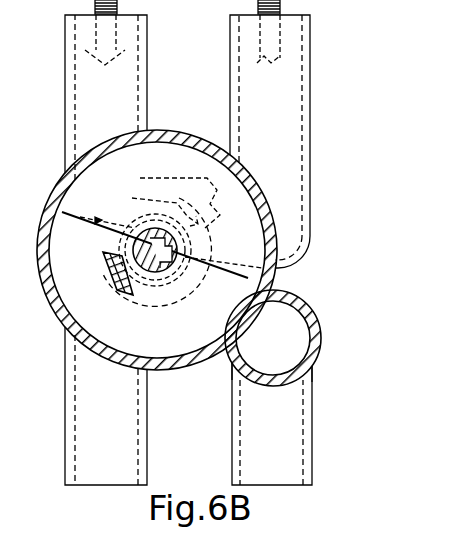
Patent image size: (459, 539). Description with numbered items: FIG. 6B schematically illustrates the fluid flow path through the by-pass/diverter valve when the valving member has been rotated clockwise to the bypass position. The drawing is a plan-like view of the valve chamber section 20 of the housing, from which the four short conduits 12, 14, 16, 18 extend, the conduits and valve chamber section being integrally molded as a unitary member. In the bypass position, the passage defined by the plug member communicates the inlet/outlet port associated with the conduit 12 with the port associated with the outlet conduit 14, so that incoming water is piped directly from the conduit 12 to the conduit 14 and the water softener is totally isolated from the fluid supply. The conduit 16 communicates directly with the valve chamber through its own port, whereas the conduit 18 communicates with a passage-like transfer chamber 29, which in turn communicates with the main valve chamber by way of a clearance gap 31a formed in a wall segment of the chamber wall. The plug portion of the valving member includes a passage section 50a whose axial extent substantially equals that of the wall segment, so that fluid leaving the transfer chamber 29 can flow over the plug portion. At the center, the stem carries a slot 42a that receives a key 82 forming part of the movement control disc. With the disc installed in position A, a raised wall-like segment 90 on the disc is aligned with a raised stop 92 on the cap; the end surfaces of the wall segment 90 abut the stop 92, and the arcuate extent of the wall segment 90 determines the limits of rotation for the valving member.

The conduit 12 is at (88, 103).
The conduit 14 is at (292, 110).
The passage section 50a is at (72, 167).
The valve chamber section 20 is at (275, 270).
The slot 42a is at (197, 264).
The transfer chamber 29 is at (293, 333).
The stop 92 is at (122, 290).
The wall segment 90 is at (157, 305).
The key 82 is at (195, 292).
The clearance gap 31a is at (245, 382).
The conduit 16 is at (90, 420).
The conduit 18 is at (287, 415).